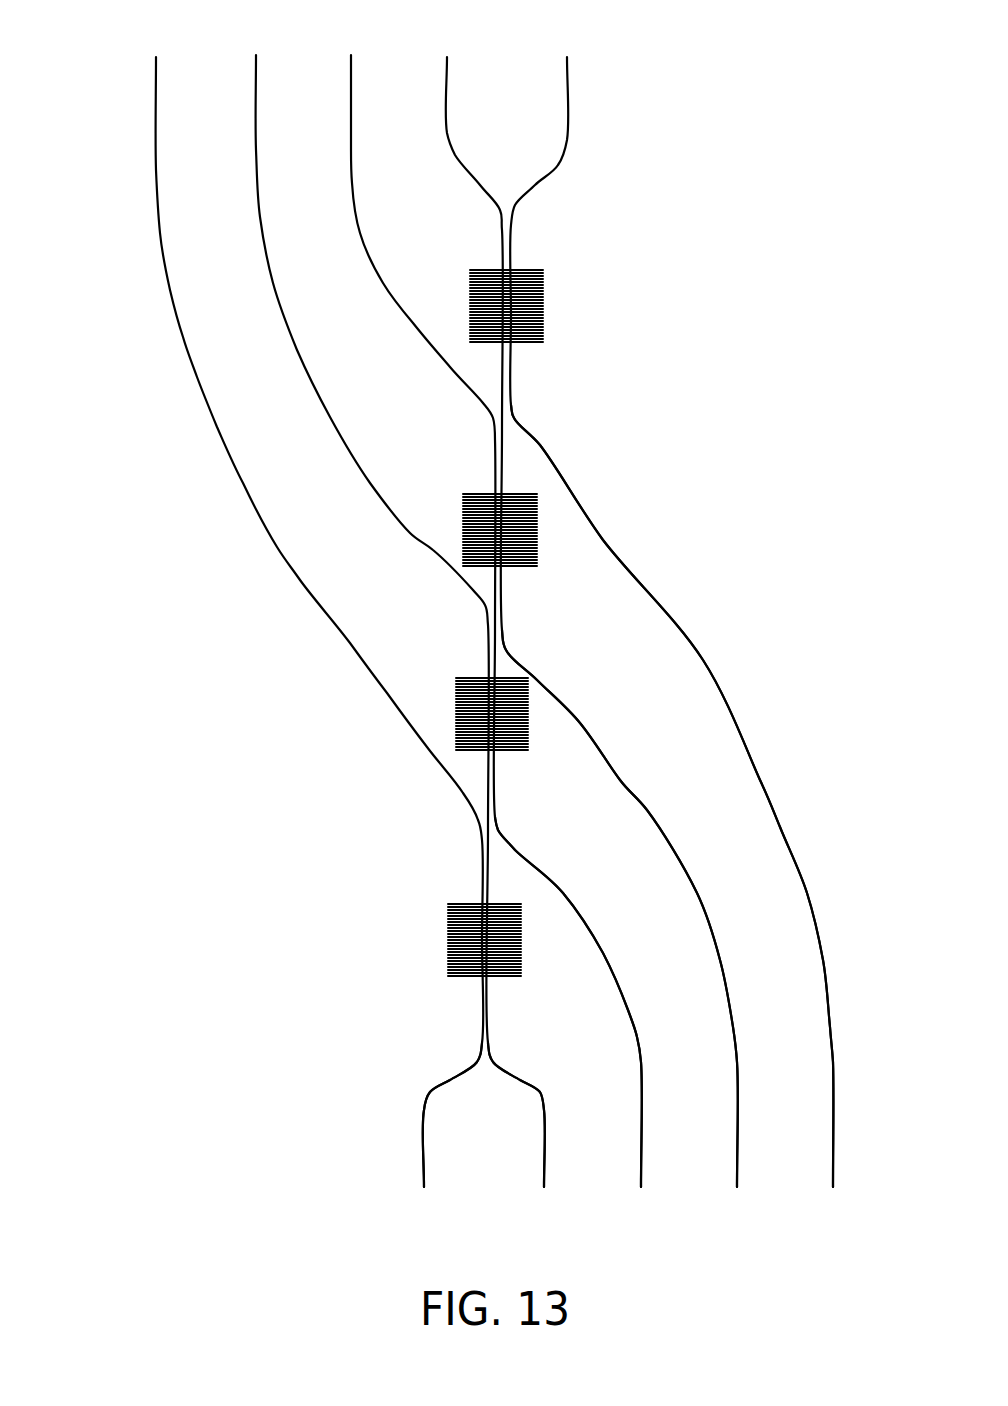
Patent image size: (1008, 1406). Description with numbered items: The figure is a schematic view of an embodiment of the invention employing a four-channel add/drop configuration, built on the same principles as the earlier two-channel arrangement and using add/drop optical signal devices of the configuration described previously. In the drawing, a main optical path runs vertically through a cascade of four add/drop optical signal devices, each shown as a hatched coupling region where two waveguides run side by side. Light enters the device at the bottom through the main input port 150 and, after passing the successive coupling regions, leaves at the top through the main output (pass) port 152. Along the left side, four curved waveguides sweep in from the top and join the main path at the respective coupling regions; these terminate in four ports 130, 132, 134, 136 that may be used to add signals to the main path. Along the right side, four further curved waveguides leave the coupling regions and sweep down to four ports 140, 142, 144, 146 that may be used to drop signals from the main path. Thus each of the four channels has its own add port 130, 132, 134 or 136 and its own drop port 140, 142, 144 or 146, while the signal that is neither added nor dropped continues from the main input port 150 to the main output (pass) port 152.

The add port 130 is at (156, 85).
The add port 132 is at (256, 62).
The add port 134 is at (351, 62).
The add port 136 is at (447, 67).
The drop port 140 is at (544, 1174).
The drop port 142 is at (641, 1175).
The drop port 144 is at (737, 1172).
The drop port 146 is at (833, 1153).
The main input port 150 is at (424, 1137).
The main output (pass) port 152 is at (567, 100).